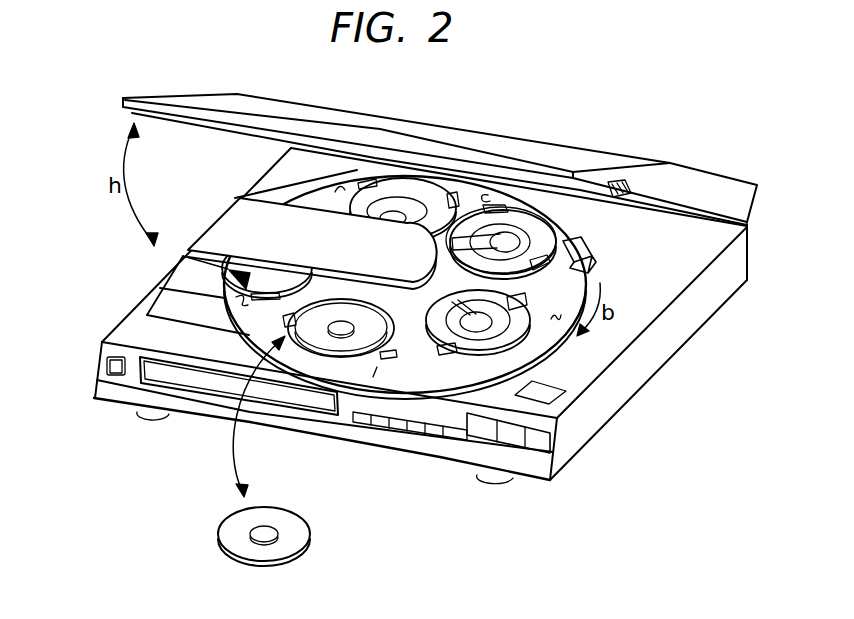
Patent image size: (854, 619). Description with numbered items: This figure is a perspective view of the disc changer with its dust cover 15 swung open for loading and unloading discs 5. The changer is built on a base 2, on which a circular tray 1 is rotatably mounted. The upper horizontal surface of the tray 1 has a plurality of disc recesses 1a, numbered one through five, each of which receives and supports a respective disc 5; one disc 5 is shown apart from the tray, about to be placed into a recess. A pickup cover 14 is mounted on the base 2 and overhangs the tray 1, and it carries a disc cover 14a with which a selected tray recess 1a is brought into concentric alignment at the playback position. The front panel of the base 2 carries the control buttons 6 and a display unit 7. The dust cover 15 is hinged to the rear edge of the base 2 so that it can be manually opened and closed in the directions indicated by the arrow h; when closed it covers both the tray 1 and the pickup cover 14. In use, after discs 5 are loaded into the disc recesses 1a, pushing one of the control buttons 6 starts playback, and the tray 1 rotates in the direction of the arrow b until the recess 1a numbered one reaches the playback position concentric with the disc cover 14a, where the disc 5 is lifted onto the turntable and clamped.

The tray 1 is at (548, 338).
The disc recess 1a is at (391, 352).
The base 2 is at (581, 452).
The disc 5 is at (296, 546).
The control buttons 6 is at (512, 440).
The display unit 7 is at (322, 412).
The pickup cover 14 is at (238, 218).
The disc cover 14a is at (180, 255).
The dust cover 15 is at (680, 173).